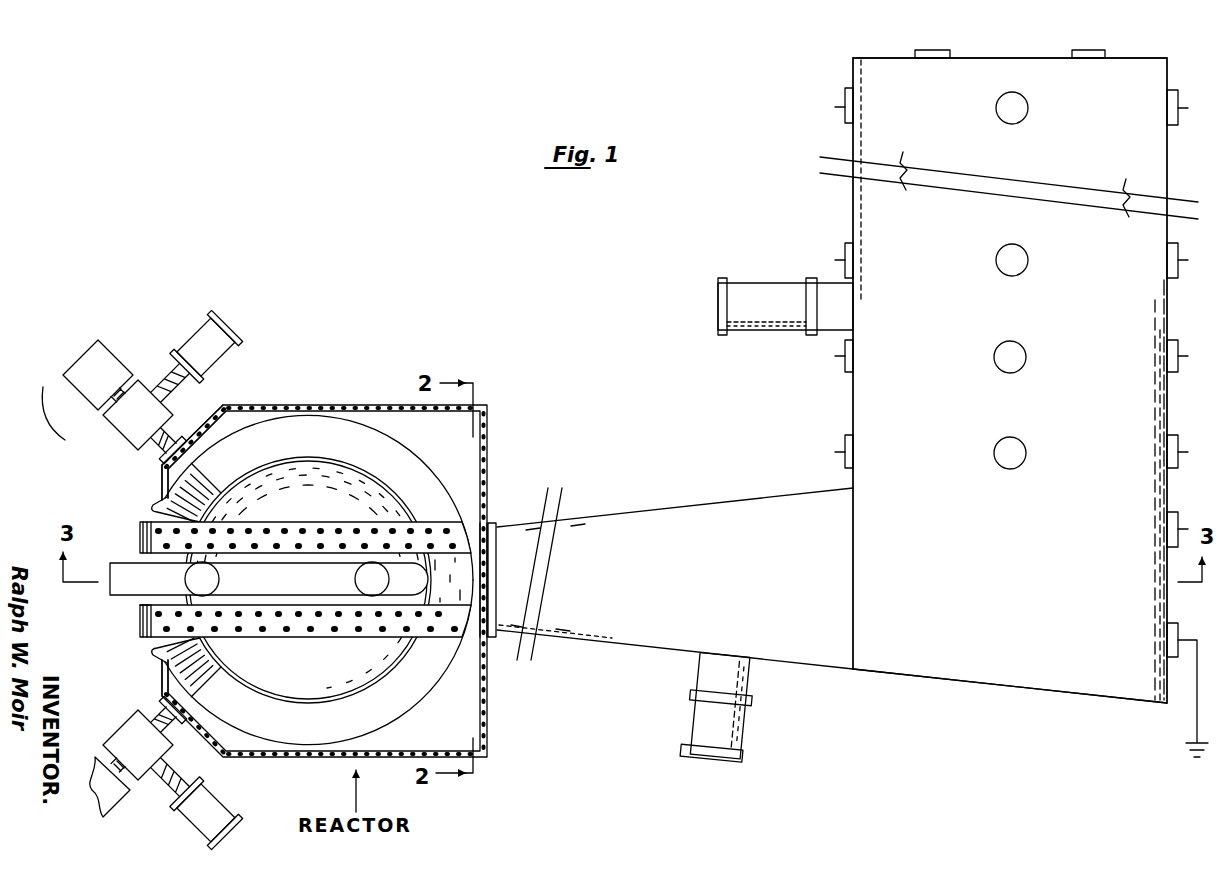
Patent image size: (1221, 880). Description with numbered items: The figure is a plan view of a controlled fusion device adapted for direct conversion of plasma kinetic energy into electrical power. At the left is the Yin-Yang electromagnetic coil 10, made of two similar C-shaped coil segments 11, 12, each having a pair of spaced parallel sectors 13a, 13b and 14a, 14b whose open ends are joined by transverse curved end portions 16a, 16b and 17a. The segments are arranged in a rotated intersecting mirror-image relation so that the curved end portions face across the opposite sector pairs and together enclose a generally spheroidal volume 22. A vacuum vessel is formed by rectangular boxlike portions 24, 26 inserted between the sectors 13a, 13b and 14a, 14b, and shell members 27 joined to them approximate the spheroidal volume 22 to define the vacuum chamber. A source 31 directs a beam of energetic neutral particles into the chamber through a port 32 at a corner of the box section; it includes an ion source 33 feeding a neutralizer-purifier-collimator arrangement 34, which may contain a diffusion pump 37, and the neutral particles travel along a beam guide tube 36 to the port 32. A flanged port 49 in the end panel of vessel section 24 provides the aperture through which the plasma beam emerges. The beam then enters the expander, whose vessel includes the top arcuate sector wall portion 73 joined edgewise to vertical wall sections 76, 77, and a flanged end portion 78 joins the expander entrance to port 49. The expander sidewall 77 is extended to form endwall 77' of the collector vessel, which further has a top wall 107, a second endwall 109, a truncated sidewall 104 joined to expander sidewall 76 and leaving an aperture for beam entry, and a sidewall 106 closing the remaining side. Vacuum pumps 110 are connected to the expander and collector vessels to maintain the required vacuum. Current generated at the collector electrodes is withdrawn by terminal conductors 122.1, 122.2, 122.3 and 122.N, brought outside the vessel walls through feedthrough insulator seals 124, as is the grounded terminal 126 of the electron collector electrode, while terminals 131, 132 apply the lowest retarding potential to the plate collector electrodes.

The Yin-Yang electromagnetic coil 10 is at (160, 655).
The coil segment 11 is at (158, 506).
The coil segment 12 is at (148, 600).
The sector 13a is at (282, 448).
The sector 13b is at (92, 492).
The sector 14a is at (267, 552).
The sector 14b is at (266, 634).
The transverse curved end portion 16a is at (158, 515).
The transverse curved end portion 16b is at (162, 655).
The transverse curved end portion 17a is at (426, 590).
The spheroidal volume 22 is at (323, 459).
The rectangular boxlike vessel portion 24 is at (413, 740).
The rectangular boxlike vessel portion 26 is at (133, 590).
The shell member 27 is at (283, 506).
The source 31 is at (120, 462).
The port 32 is at (165, 452).
The ion source 33 is at (84, 387).
The neutralizer-purifier-collimator arrangement 34 is at (124, 427).
The beam guide tube 36 is at (173, 433).
The diffusion pump 37 is at (196, 355).
The flanged port 49 is at (492, 522).
The top arcuate sector wall portion 73 is at (731, 610).
The vertical wall section 76 is at (641, 508).
The vertical wall section 77 is at (675, 659).
The endwall 77' is at (1010, 703).
The flanged end portion 78 is at (497, 526).
The truncated sidewall 104 is at (846, 386).
The sidewall 106 is at (1172, 386).
The top wall 107 is at (998, 564).
The second endwall 109 is at (987, 56).
The vacuum pump 110 is at (773, 325).
The terminal conductor 122.N is at (1012, 108).
The terminal conductor 122.3 is at (1012, 262).
The terminal conductor 122.2 is at (1010, 357).
The terminal conductor 122.1 is at (1010, 453).
The feedthrough insulator seal 124 is at (845, 102).
The grounded terminal 126 is at (1196, 700).
The terminal 131 is at (933, 48).
The terminal 132 is at (1091, 48).